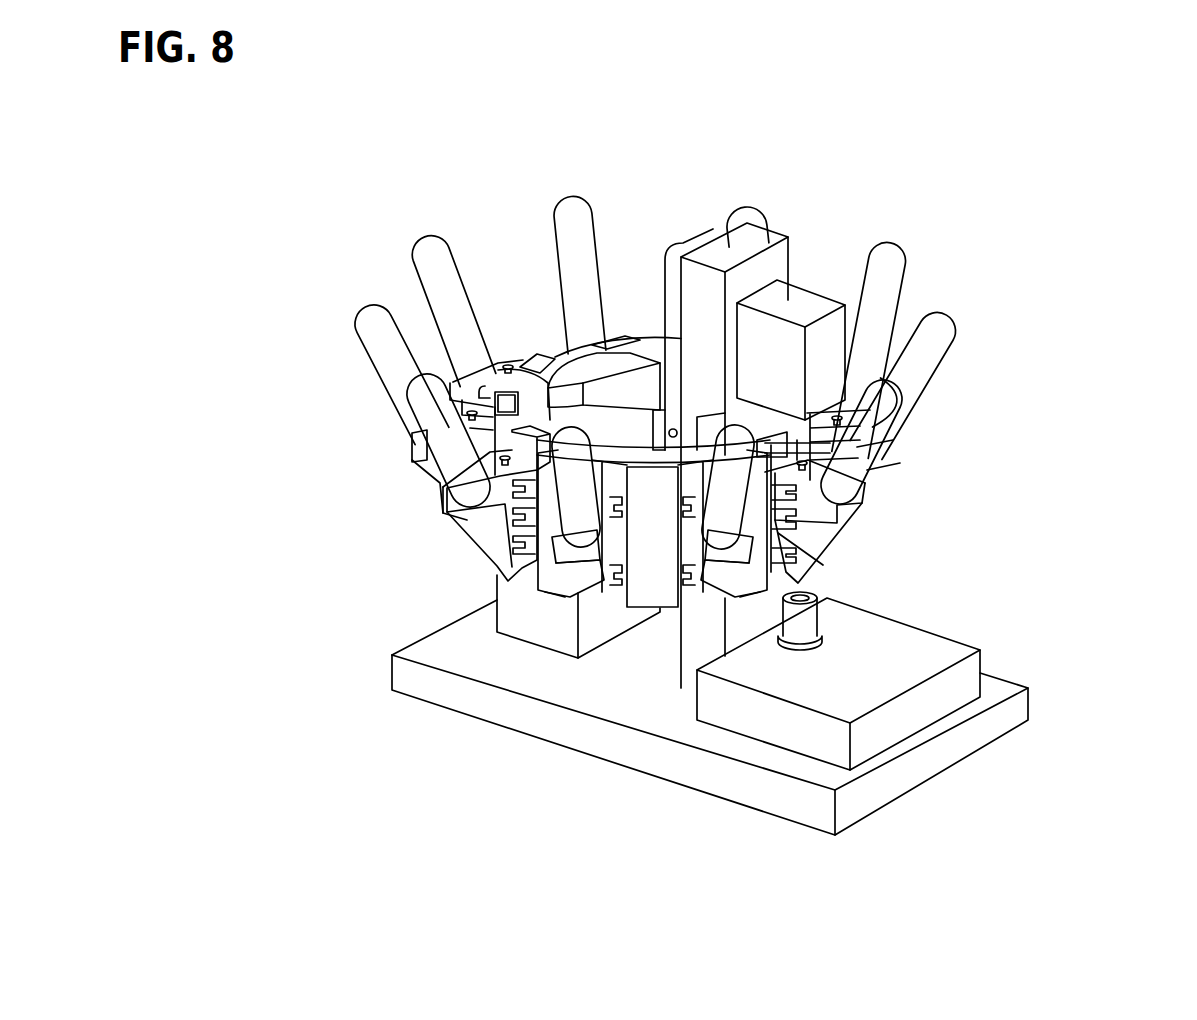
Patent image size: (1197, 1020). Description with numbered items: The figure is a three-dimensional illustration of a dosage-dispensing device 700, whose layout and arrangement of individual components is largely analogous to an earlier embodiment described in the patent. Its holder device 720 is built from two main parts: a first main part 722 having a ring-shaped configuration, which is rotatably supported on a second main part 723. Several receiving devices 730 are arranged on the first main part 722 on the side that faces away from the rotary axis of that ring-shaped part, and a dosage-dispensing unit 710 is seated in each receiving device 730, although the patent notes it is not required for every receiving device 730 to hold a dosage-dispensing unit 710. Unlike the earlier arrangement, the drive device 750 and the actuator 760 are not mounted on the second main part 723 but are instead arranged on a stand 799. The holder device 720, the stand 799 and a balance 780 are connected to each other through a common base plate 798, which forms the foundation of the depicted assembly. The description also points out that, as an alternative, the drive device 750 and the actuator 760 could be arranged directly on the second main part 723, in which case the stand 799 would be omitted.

The dosage-dispensing device 700 is at (958, 234).
The dosage-dispensing unit 710 is at (877, 483).
The holder device 720 is at (453, 586).
The first main part 722 is at (535, 397).
The second main part 723 is at (587, 383).
The receiving device 730 is at (495, 445).
The drive device 750 is at (795, 303).
The actuator 760 is at (675, 305).
The balance 780 is at (878, 658).
The base plate 798 is at (593, 740).
The stand 799 is at (740, 245).